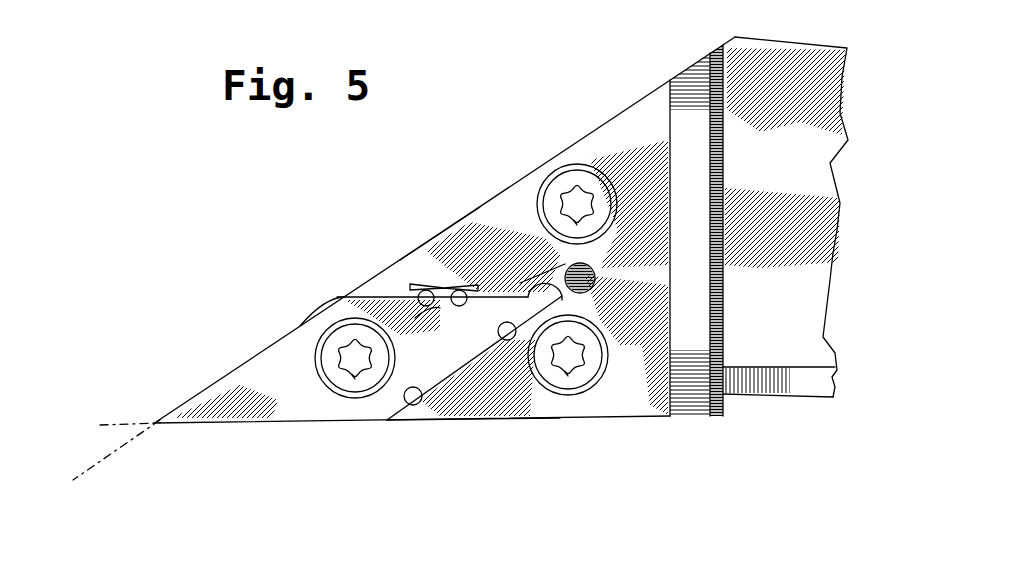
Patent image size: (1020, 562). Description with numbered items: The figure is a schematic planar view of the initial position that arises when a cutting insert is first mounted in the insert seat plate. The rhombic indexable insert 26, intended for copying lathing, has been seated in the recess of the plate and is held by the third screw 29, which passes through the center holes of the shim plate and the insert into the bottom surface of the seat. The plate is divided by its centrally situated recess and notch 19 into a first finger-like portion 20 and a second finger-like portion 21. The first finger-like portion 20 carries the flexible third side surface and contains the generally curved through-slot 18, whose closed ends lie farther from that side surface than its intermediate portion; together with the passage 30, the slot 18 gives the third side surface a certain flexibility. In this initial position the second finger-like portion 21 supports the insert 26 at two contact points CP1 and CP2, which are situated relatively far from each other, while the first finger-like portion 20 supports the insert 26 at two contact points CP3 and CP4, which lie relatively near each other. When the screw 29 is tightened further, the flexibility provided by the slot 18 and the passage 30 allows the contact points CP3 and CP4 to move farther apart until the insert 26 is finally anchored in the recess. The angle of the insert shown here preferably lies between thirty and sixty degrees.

The slot 18 is at (448, 292).
The notch 19 is at (560, 300).
The first finger-like portion 20 is at (440, 222).
The second finger-like portion 21 is at (492, 422).
The indexable insert 26 is at (241, 342).
The third screw 29 is at (342, 385).
The passage 30 is at (402, 292).
The contact point CP1 is at (414, 407).
The contact point CP2 is at (512, 345).
The contact point CP3 is at (416, 288).
The contact point CP4 is at (468, 290).